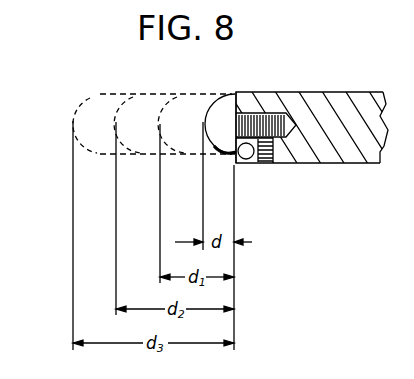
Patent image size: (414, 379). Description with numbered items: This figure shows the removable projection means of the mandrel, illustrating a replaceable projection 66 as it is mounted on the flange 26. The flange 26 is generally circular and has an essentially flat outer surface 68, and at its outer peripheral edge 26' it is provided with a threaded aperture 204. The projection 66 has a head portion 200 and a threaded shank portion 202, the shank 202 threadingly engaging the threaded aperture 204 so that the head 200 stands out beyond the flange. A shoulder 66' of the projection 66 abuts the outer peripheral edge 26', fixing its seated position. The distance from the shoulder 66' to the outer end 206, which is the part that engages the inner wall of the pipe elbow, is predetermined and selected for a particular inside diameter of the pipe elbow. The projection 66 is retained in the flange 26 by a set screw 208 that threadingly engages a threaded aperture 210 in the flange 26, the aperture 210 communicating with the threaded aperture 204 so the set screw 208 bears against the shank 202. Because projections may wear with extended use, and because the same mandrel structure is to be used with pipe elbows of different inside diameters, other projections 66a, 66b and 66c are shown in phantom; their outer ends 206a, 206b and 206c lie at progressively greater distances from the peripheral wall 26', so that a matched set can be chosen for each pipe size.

The flange 26 is at (386, 147).
The peripheral edge 26' is at (254, 113).
The projection 66 is at (253, 163).
The shoulder 66' is at (252, 169).
The projection 66a is at (178, 156).
The projection 66b is at (135, 156).
The projection 66c is at (91, 156).
The outer surface 68 is at (347, 92).
The head portion 200 is at (221, 95).
The threaded shank portion 202 is at (274, 116).
The threaded aperture 204 is at (268, 120).
The outer end 206 is at (205, 113).
The outer end 206a is at (156, 113).
The outer end 206b is at (117, 118).
The outer end 206c is at (74, 116).
The set screw 208 is at (267, 165).
The threaded aperture 210 is at (280, 146).